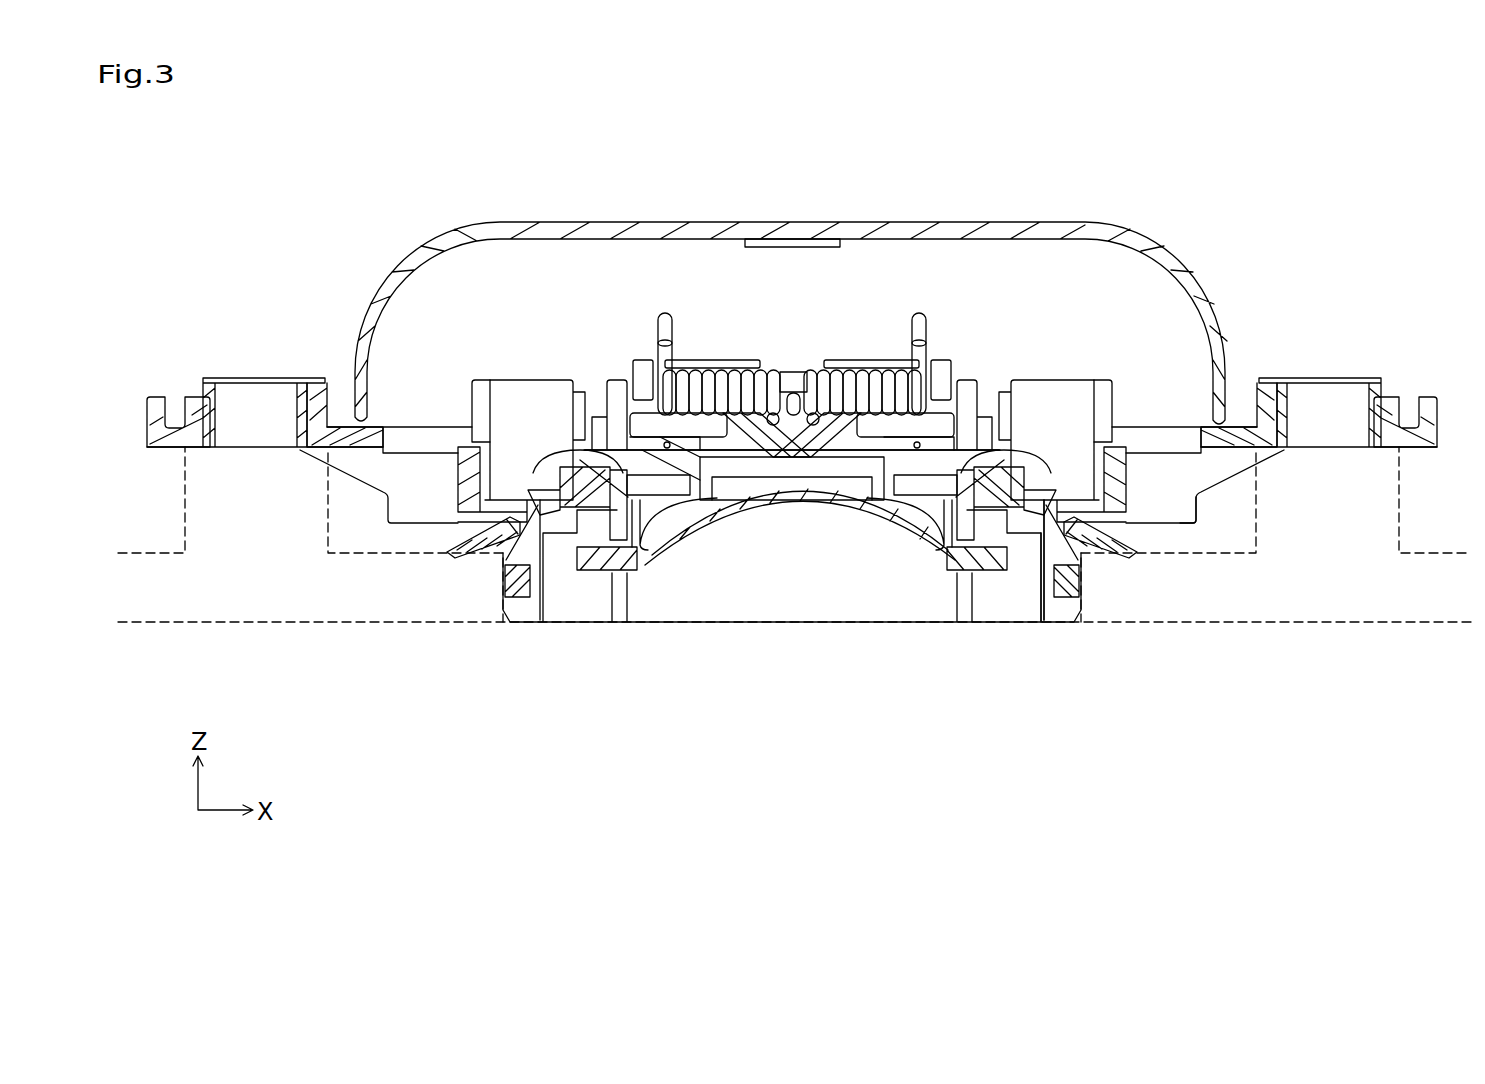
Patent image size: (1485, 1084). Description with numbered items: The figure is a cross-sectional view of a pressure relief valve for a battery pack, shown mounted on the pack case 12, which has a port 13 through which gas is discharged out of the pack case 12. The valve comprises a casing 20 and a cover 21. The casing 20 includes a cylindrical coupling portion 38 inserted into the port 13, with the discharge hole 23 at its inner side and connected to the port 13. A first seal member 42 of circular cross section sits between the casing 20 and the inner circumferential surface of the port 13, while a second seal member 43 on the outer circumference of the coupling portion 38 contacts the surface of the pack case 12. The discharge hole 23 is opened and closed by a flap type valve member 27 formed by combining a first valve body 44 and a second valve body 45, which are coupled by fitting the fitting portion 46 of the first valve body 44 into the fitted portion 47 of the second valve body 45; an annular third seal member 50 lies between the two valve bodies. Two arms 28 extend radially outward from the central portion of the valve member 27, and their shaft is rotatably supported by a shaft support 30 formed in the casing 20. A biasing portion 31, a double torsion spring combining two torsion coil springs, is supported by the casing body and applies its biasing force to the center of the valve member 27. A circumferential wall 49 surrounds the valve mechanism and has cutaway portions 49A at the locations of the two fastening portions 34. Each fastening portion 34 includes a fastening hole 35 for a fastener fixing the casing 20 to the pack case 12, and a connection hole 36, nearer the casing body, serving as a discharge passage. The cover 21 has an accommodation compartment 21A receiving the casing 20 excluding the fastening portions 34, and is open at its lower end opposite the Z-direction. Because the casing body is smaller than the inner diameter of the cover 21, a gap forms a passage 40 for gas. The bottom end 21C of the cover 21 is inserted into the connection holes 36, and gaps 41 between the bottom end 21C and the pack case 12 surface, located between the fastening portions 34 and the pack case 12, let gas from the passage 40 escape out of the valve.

The pack case 12 is at (150, 552).
The port 13 is at (511, 625).
The casing 20 is at (1062, 378).
The cover 21 is at (448, 243).
The accommodation compartment 21A is at (528, 242).
The bottom end 21C is at (1190, 527).
The discharge hole 23 is at (1040, 605).
The valve member 27 is at (737, 395).
The arm 28 is at (645, 360).
The shaft support 30 is at (615, 380).
The biasing portion 31 is at (868, 388).
The fastening portion 34 is at (157, 397).
The fastening hole 35 is at (232, 390).
The connection hole 36 is at (385, 410).
The coupling portion 38 is at (1083, 575).
The passage 40 is at (1167, 420).
The gap 41 is at (1166, 546).
The first seal member 42 is at (503, 580).
The second seal member 43 is at (445, 543).
The first valve body 44 is at (690, 548).
The second valve body 45 is at (1040, 470).
The fitting portion 46 is at (640, 572).
The fitted portion 47 is at (602, 575).
The circumferential wall 49 is at (525, 378).
The cutaway portion 49A is at (473, 415).
The third seal member 50 is at (533, 490).